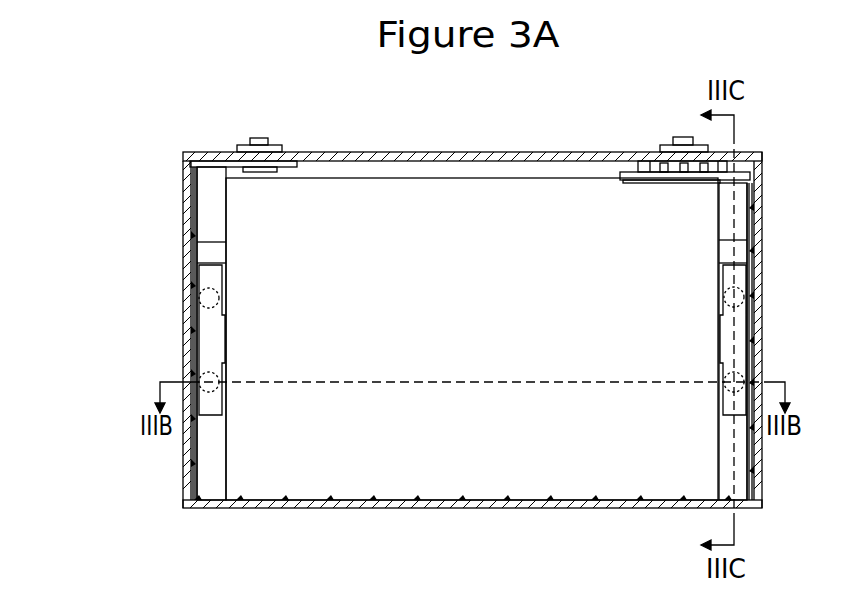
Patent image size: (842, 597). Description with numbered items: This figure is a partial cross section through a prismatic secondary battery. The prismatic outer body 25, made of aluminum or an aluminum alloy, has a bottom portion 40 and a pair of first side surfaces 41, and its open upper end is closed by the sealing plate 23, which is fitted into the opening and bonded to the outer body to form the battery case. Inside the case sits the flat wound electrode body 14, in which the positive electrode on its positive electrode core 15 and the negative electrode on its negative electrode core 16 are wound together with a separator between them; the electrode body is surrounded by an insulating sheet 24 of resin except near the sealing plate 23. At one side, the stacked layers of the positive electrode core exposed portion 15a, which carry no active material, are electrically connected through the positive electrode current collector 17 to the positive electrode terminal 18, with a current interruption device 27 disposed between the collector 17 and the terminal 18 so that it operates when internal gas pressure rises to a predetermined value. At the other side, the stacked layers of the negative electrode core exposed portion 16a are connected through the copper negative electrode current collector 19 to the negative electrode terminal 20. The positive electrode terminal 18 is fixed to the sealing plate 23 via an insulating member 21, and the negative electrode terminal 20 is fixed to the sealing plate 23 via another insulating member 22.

The flat wound electrode body 14 is at (492, 462).
The positive electrode core 15 is at (728, 442).
The positive electrode core exposed portion 15a is at (740, 470).
The negative electrode core 16 is at (212, 453).
The negative electrode core exposed portion 16a is at (207, 478).
The positive electrode current collector 17 is at (738, 228).
The positive electrode terminal 18 is at (682, 135).
The negative electrode current collector 19 is at (205, 277).
The negative electrode terminal 20 is at (258, 137).
The insulating member 21 is at (658, 152).
The insulating member 22 is at (285, 152).
The sealing plate 23 is at (515, 152).
The insulating sheet 24 is at (565, 509).
The prismatic outer body 25 is at (655, 509).
The current interruption device 27 is at (672, 172).
The bottom portion 40 is at (413, 509).
The first side surfaces 41 is at (182, 308).